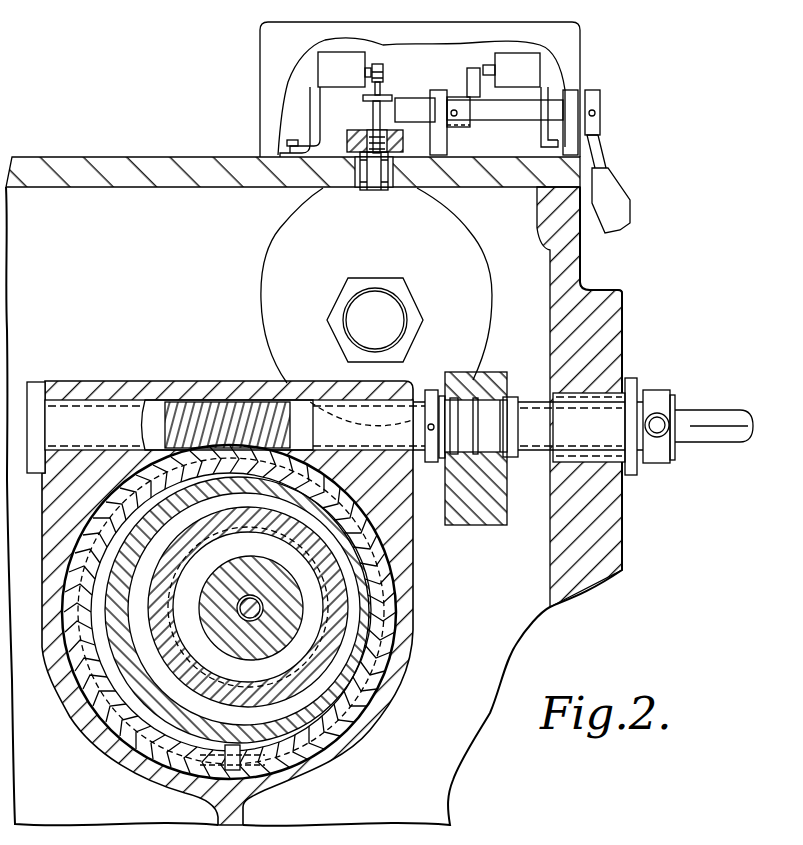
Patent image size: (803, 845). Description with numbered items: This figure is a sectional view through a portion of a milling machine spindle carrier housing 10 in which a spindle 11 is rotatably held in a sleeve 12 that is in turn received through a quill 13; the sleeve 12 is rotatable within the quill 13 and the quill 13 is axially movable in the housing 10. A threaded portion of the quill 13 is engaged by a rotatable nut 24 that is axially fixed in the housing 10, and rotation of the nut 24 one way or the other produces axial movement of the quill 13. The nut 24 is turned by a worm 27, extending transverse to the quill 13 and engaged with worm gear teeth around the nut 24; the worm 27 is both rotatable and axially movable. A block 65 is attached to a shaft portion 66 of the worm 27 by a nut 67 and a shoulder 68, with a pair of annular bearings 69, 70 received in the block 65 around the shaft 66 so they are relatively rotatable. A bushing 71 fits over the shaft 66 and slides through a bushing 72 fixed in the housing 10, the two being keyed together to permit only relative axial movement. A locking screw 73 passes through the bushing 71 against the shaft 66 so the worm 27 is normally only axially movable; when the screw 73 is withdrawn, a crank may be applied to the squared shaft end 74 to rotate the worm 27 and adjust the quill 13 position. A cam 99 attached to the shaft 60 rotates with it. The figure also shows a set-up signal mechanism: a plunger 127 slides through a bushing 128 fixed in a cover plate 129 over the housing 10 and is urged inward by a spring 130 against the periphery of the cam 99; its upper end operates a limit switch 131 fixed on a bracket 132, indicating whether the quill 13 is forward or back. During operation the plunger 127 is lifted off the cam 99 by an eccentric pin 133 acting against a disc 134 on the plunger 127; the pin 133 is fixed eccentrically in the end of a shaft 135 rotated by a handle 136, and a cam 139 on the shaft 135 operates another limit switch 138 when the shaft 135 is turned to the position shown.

The spindle carrier housing 10 is at (594, 591).
The spindle 11 is at (203, 653).
The sleeve 12 is at (187, 676).
The quill 13 is at (356, 679).
The nut 24 is at (400, 609).
The worm 27 is at (226, 400).
The shaft 60 is at (343, 335).
The block 65 is at (486, 526).
The shaft portion 66 is at (418, 462).
The nut 67 is at (432, 390).
The shoulder 68 is at (518, 425).
The annular bearing 69 is at (472, 400).
The annular bearing 70 is at (487, 397).
The bushing 71 is at (539, 402).
The bushing 72 is at (634, 380).
The locking screw 73 is at (660, 434).
The squared shaft end 74 is at (731, 410).
The cam 99 is at (273, 246).
The plunger 127 is at (402, 187).
The bushing 128 is at (358, 188).
The cover plate 129 is at (234, 157).
The spring 130 is at (366, 140).
The limit switch 131 is at (318, 57).
The bracket 132 is at (308, 99).
The eccentric pin 133 is at (394, 98).
The disc 134 is at (387, 94).
The shaft 135 is at (523, 121).
The handle 136 is at (607, 160).
The limit switch 138 is at (511, 53).
The cam 139 is at (461, 127).